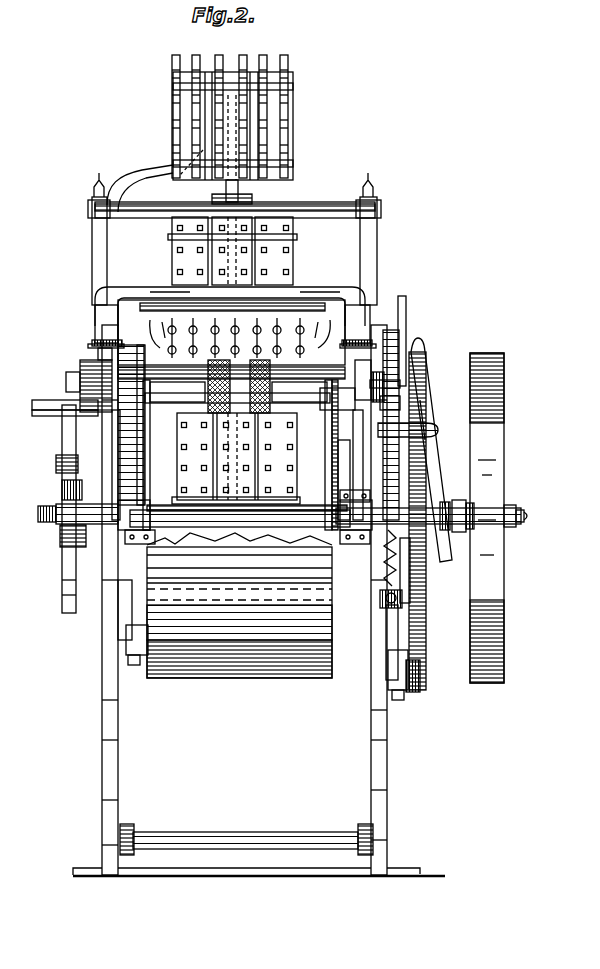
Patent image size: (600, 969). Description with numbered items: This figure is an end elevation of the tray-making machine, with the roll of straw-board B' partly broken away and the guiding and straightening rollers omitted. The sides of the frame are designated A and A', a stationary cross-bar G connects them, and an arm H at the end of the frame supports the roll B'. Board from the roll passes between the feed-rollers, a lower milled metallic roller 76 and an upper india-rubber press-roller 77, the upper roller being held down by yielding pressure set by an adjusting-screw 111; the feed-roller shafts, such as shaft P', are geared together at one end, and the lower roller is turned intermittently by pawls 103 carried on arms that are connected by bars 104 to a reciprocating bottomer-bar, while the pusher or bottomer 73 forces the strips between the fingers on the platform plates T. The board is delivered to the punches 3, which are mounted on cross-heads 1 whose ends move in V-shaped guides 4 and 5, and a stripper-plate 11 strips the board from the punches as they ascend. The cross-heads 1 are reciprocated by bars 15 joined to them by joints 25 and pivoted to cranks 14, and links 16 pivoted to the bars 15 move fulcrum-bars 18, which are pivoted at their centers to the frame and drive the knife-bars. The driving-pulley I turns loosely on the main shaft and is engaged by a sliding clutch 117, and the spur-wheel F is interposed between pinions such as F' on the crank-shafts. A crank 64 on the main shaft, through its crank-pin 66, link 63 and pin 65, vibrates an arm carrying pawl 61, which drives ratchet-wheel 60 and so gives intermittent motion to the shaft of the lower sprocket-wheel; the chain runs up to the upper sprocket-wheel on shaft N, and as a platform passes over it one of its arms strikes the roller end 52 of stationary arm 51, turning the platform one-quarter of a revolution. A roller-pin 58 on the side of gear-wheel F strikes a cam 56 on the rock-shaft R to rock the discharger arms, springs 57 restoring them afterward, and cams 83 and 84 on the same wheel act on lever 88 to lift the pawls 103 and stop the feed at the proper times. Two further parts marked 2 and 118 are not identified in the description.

The roller end 52 is at (205, 131).
The stationary arm 51 is at (128, 178).
The shaft N is at (322, 190).
The lower feed-roller 76 is at (218, 340).
The upper press-roller 77 is at (238, 340).
The curved top rail 2 is at (300, 318).
The punches 3 is at (231, 332).
The cross-heads 1 is at (238, 329).
The V-shaped guide 5 is at (107, 325).
The V-shaped guide 4 is at (357, 325).
The adjusting-screw 111 is at (106, 344).
The pusher or bottomer 73 is at (231, 389).
The feed-roller shaft P' is at (247, 461).
The fulcrum-bars 18 is at (140, 440).
The stripper-plate 11 is at (333, 468).
The cranks 14 is at (245, 526).
The platform plates T is at (196, 541).
The roll of straw-board B' is at (239, 623).
The frame side A' is at (121, 600).
The frame side A is at (387, 600).
The cross-bar G is at (330, 808).
The driving-pulley I is at (504, 448).
The sliding clutch 117 is at (462, 540).
The cam 56 is at (426, 640).
The inclined arm 118 is at (426, 380).
The bars 104 is at (407, 328).
The pawls 103 is at (402, 390).
The pinion F' is at (418, 440).
The lever 88 is at (390, 490).
The bars 15 is at (345, 470).
The springs 57 is at (396, 560).
The cam 83 is at (410, 580).
The spur-wheel F is at (415, 634).
The roller-pin 58 is at (402, 700).
The cam 84 is at (412, 692).
The joints 25 is at (98, 362).
The links 16 is at (122, 432).
The arm H is at (138, 485).
The pin 65 is at (64, 408).
The ratchet-wheel 60 is at (62, 600).
The pawl 61 is at (56, 464).
The link 63 is at (62, 488).
The crank-pin 66 is at (38, 514).
The crank 64 is at (62, 528).
The rock-shaft R is at (128, 648).